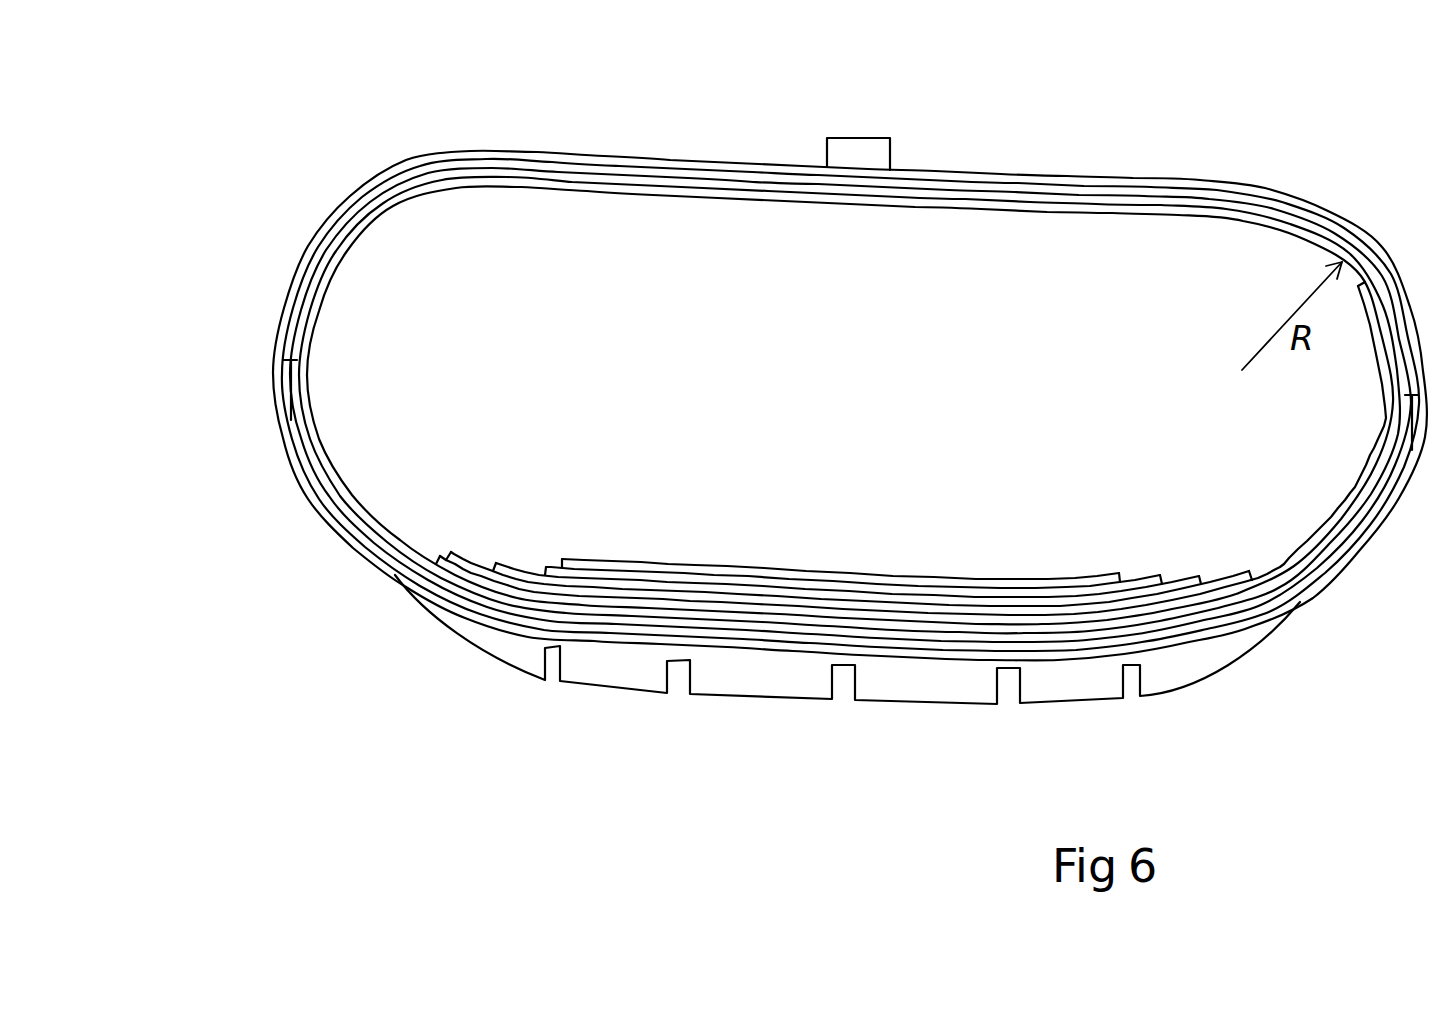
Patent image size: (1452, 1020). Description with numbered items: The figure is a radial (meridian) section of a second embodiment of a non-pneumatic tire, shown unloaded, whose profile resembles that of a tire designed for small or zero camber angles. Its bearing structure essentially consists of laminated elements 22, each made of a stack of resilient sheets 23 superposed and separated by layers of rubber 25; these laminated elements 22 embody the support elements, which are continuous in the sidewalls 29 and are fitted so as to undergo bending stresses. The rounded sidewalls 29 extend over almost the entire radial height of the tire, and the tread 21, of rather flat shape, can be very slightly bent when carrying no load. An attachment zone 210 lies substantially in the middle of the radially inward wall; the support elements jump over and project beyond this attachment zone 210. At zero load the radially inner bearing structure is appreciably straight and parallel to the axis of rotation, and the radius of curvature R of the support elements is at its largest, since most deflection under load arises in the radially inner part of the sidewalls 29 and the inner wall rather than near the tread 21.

The tread 21 is at (770, 678).
The laminated elements 22 is at (660, 165).
The resilient sheets 23 is at (385, 553).
The layers of rubber 25 is at (315, 472).
The sidewalls 29 is at (776, 393).
The attachment zone 210 is at (860, 133).